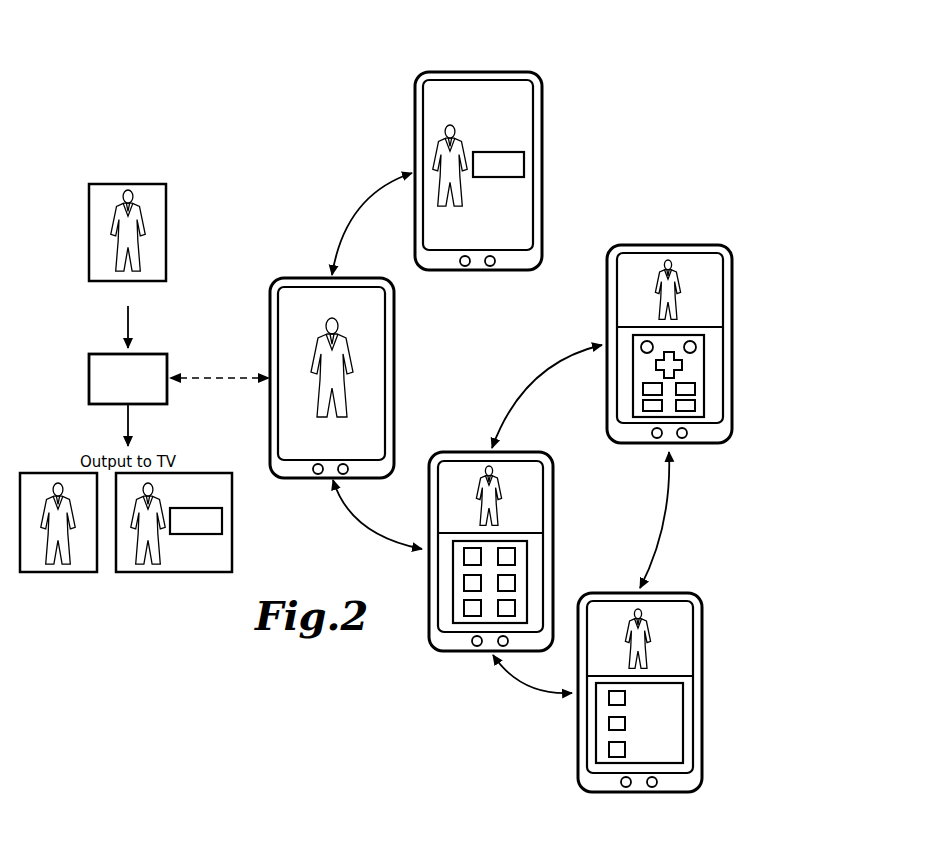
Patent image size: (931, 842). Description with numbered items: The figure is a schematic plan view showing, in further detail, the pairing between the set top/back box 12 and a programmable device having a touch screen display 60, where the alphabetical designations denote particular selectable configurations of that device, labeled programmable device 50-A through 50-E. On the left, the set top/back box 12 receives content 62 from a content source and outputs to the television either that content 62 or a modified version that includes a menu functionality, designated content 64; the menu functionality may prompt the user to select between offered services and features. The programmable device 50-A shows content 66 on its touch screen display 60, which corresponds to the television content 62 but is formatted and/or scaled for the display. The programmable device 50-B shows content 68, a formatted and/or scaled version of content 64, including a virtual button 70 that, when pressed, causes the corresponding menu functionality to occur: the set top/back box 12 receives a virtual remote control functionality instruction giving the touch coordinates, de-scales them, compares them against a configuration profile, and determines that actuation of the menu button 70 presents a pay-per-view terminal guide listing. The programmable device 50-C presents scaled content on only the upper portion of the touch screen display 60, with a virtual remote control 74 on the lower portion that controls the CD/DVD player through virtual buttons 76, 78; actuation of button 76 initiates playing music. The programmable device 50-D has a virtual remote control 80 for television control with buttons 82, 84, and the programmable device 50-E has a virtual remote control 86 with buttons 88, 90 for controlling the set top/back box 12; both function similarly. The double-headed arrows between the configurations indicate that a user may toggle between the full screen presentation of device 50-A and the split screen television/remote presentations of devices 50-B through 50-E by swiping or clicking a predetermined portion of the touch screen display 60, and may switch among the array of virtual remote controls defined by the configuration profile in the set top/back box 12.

The set top/back box 12 is at (89, 380).
The programmable device 50-A is at (353, 373).
The programmable device 50-B is at (521, 142).
The programmable device 50-C is at (502, 546).
The programmable device 50-D is at (715, 316).
The programmable device 50-E is at (657, 663).
The touch screen display 60 is at (381, 324).
The content 62 is at (90, 237).
The content 64 is at (173, 574).
The content 66 is at (288, 332).
The content 68 is at (509, 87).
The virtual button 70 is at (525, 165).
The virtual remote control 74 is at (448, 584).
The virtual button 76 is at (464, 554).
The virtual button 78 is at (464, 606).
The virtual remote control 80 is at (709, 379).
The button 82 is at (683, 366).
The button 84 is at (696, 403).
The virtual remote control 86 is at (647, 726).
The button 88 is at (609, 700).
The button 90 is at (609, 751).